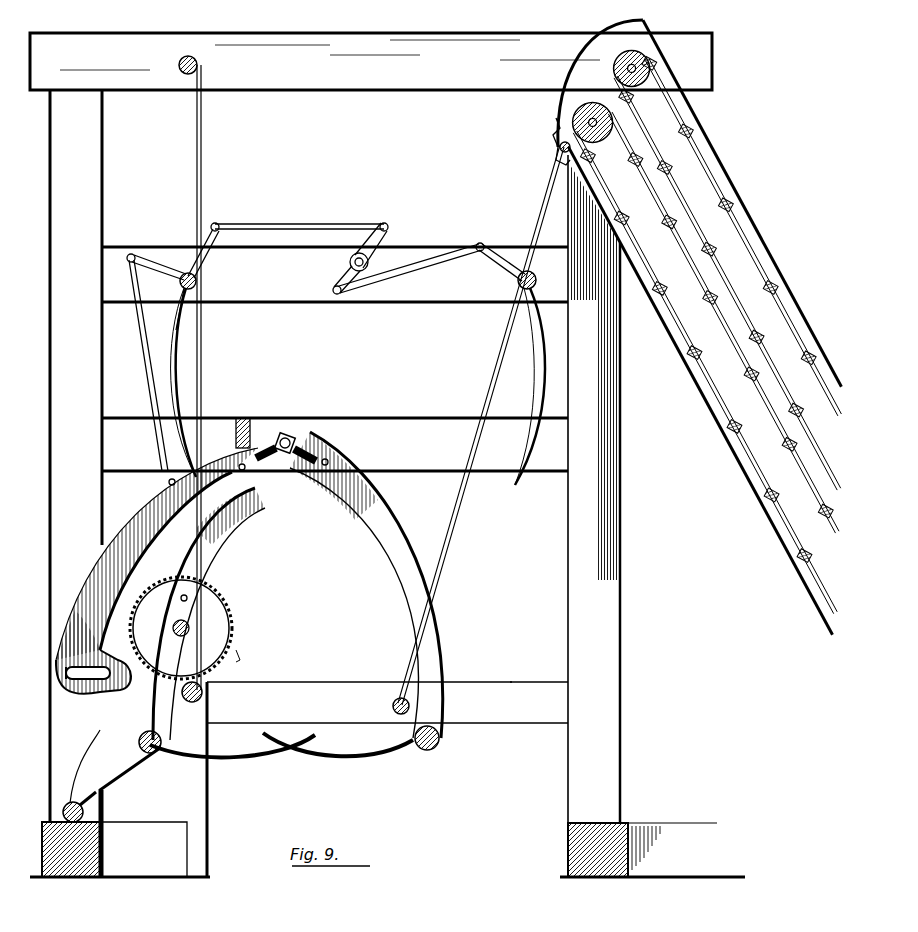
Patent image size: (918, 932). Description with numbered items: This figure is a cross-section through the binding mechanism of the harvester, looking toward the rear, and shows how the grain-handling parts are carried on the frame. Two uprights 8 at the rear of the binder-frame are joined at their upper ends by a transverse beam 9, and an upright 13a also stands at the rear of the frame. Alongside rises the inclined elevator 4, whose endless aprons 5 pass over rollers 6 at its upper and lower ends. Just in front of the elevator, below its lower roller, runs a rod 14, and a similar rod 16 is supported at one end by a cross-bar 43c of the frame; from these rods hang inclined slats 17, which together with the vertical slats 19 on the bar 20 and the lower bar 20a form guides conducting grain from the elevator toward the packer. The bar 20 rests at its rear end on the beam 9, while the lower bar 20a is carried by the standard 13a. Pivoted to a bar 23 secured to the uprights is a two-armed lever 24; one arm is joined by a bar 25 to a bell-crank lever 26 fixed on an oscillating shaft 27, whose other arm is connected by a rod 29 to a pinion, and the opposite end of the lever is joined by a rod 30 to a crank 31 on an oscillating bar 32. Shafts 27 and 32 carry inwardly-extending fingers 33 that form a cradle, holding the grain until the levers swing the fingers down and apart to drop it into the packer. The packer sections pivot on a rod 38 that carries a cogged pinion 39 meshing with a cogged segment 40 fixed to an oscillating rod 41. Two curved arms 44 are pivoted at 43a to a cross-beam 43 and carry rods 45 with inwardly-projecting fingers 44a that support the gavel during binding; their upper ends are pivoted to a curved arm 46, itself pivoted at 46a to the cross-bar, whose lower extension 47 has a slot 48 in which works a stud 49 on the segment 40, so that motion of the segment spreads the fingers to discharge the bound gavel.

The elevator 4 is at (745, 232).
The endless aprons 5 is at (790, 374).
The rollers 6 is at (582, 115).
The uprights or standards 8 is at (387, 483).
The transverse beam or bar 9 is at (371, 61).
The upright 13a is at (210, 795).
The rod or bar 14 is at (558, 149).
The rod or bar 16 is at (390, 706).
The inclined slats or bars 17 is at (486, 392).
The vertical slats 19 is at (211, 377).
The bar 20 is at (178, 68).
The lower bar 20a is at (204, 698).
The bar 23 is at (310, 272).
The two-armed lever 24 is at (363, 258).
The bar 25 is at (300, 212).
The bell-crank lever 26 is at (156, 278).
The oscillating shaft 27 is at (168, 310).
The rod 29 is at (143, 365).
The rod 30 is at (470, 238).
The crank 31 is at (500, 255).
The oscillating bar 32 is at (536, 286).
The slats or fingers 33 is at (176, 372).
The rod 38 is at (190, 628).
The cogged pinion 39 is at (222, 590).
The cogged segment 40 is at (115, 800).
The oscillating rod 41 is at (172, 755).
The cross-beam 43 is at (314, 440).
The pivot 43a is at (330, 445).
The cross-bar 43c is at (496, 695).
The curved arms 44 is at (298, 586).
The slats or fingers 44a is at (281, 757).
The rods 45 is at (172, 760).
The curved arm 46 is at (140, 515).
The pivot 46a is at (168, 480).
The extension 47 is at (64, 665).
The slot 48 is at (88, 680).
The stud 49 is at (70, 660).